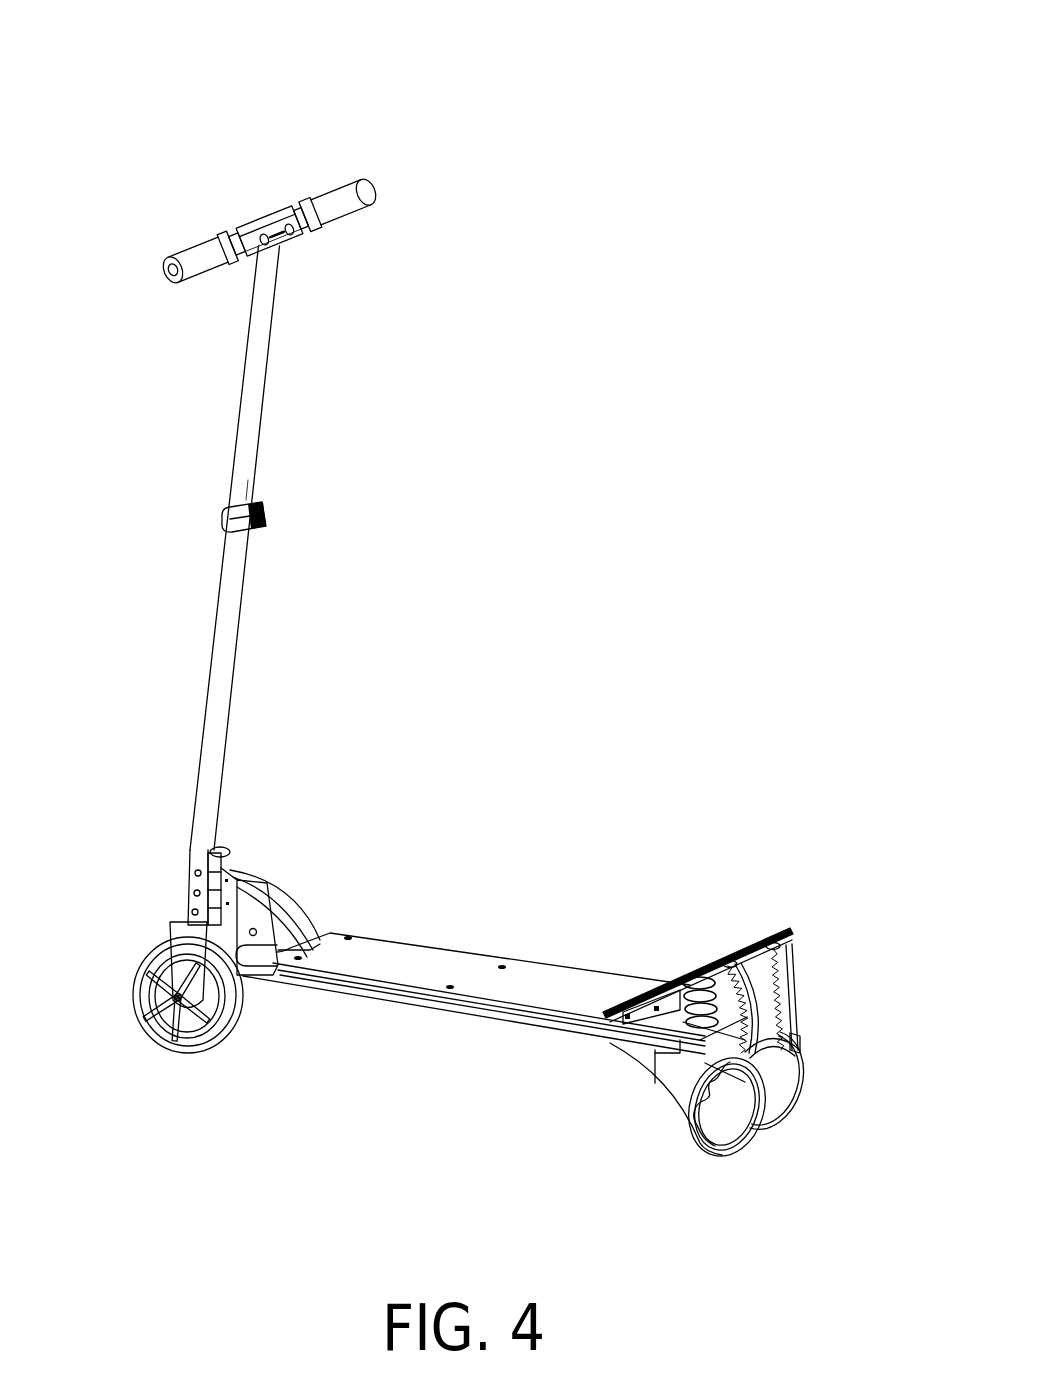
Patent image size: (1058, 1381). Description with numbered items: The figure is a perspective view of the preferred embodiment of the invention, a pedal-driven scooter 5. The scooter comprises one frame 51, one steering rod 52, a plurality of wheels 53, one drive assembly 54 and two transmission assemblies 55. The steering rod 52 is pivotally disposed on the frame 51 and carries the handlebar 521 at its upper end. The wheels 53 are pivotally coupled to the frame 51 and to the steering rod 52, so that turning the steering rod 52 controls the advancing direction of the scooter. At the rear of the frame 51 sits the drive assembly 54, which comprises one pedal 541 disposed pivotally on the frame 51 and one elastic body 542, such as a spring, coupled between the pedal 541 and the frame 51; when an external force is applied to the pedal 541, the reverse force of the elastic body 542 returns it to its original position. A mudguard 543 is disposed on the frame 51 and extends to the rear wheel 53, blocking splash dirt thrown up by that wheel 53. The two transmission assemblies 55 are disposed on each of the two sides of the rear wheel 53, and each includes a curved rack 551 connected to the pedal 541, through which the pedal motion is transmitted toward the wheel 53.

The scooter 5 is at (180, 167).
The frame 51 is at (407, 967).
The steering rod 52 is at (233, 582).
The handlebar 521 is at (367, 213).
The wheels 53 is at (220, 1033).
The drive assembly 54 is at (690, 952).
The pedal 541 is at (668, 985).
The elastic body 542 is at (706, 992).
The mudguard 543 is at (767, 1060).
The transmission assemblies 55 is at (818, 1071).
The curved rack 551 is at (790, 992).